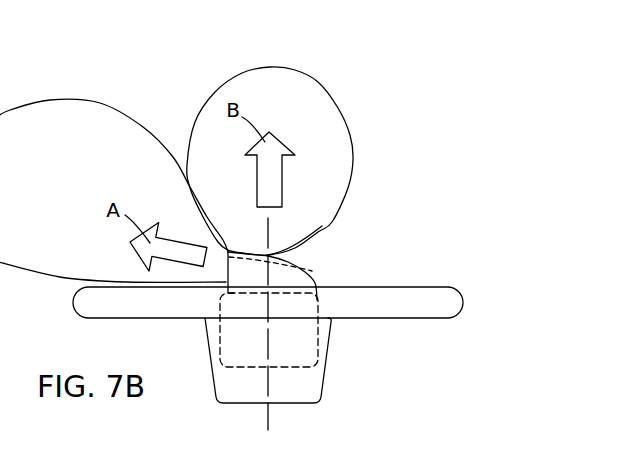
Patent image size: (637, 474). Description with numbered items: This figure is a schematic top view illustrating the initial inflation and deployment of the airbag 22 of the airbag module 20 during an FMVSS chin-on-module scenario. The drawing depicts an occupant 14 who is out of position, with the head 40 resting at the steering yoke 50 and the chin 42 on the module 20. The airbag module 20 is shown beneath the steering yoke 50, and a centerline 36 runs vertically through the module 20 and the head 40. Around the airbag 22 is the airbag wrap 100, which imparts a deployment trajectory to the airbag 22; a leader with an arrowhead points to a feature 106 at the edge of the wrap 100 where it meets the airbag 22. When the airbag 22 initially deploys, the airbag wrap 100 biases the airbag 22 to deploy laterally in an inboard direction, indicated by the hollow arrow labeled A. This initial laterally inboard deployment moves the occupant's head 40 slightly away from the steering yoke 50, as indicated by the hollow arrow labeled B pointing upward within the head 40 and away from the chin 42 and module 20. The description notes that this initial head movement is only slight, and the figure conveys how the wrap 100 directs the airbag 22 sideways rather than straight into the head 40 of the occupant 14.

The occupant 14 is at (363, 90).
The airbag module 20 is at (320, 330).
The airbag 22 is at (100, 103).
The centerline axis 36 is at (267, 417).
The head 40 is at (296, 69).
The chin 42 is at (322, 226).
The steering yoke 50 is at (413, 320).
The airbag wrap 100 is at (283, 273).
The tape edge 106 is at (222, 271).